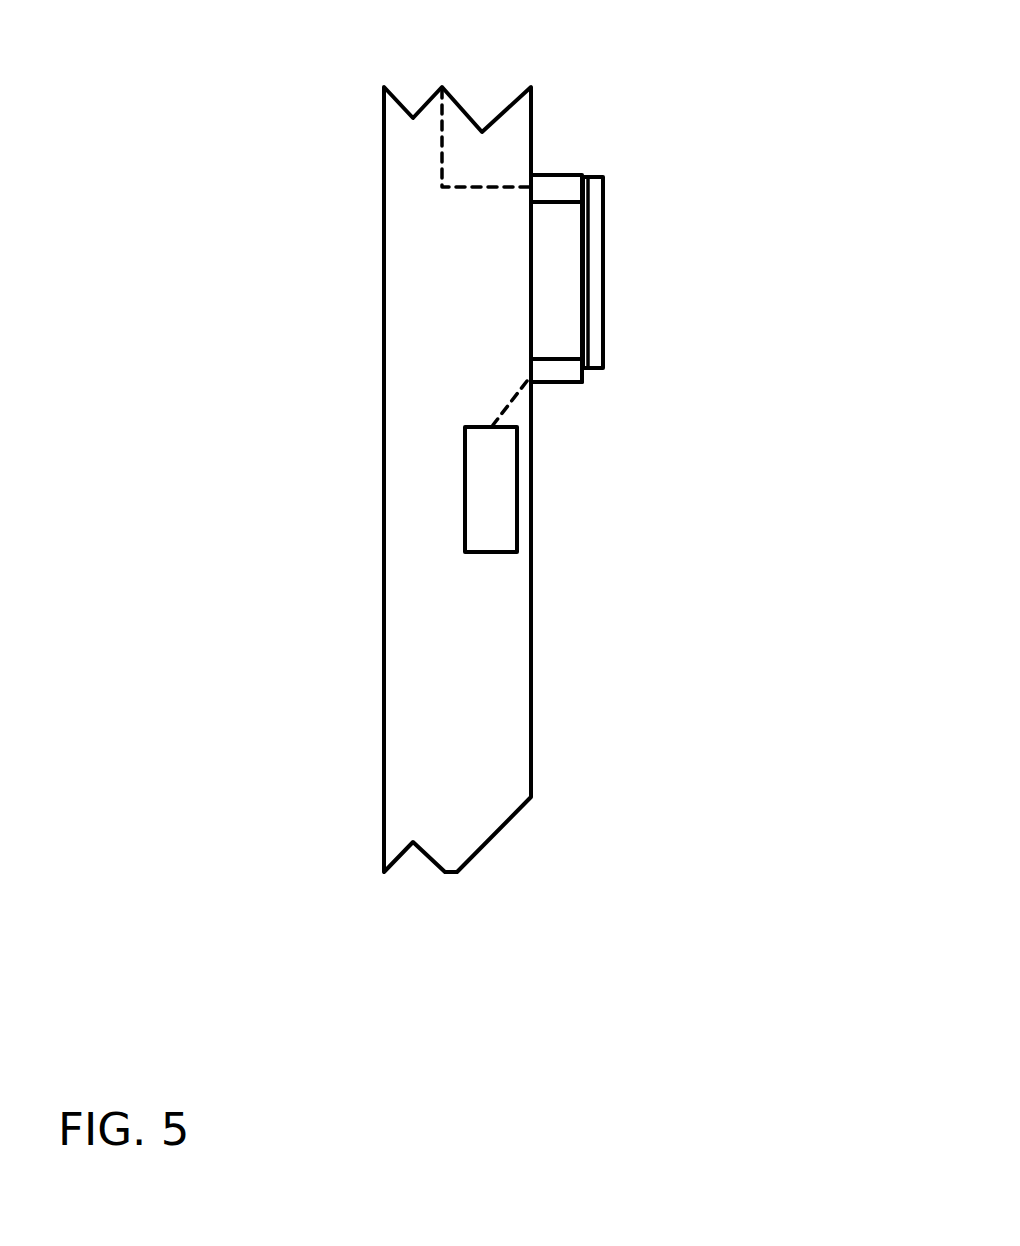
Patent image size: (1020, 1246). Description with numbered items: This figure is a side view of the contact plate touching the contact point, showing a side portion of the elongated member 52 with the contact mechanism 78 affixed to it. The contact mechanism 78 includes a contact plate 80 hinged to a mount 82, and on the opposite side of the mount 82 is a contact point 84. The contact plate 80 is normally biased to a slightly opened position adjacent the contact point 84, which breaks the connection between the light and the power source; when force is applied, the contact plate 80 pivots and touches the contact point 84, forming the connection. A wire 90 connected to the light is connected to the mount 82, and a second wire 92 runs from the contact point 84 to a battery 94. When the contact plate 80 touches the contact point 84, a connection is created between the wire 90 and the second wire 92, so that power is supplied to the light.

The elongated member 52 is at (435, 554).
The contact mechanism 78 is at (647, 256).
The contact plate 80 is at (603, 343).
The mount 82 is at (582, 382).
The contact point 84 is at (555, 138).
The wire 90 is at (477, 188).
The second wire 92 is at (512, 397).
The battery 94 is at (490, 513).